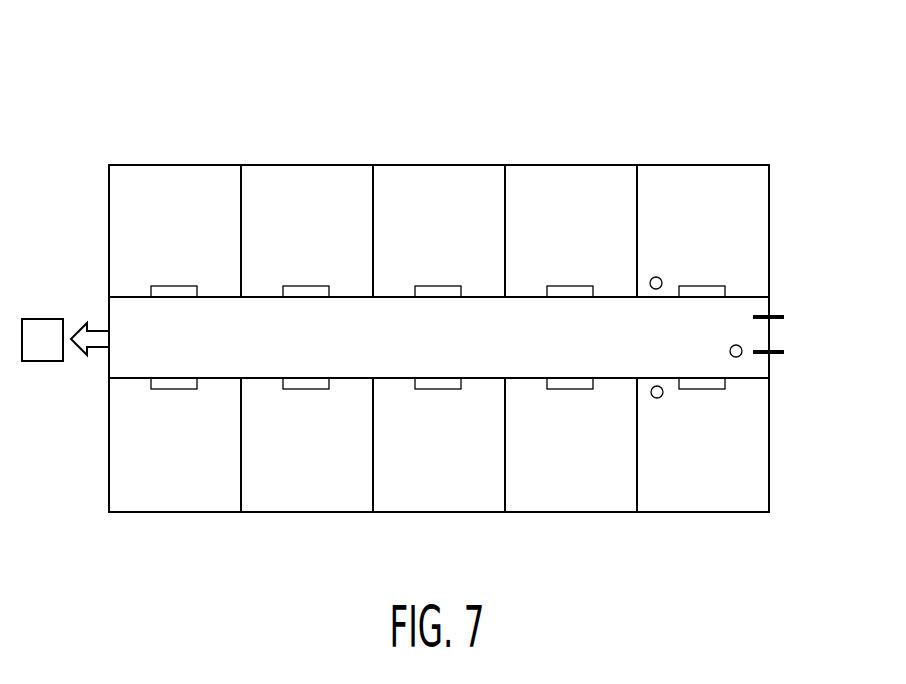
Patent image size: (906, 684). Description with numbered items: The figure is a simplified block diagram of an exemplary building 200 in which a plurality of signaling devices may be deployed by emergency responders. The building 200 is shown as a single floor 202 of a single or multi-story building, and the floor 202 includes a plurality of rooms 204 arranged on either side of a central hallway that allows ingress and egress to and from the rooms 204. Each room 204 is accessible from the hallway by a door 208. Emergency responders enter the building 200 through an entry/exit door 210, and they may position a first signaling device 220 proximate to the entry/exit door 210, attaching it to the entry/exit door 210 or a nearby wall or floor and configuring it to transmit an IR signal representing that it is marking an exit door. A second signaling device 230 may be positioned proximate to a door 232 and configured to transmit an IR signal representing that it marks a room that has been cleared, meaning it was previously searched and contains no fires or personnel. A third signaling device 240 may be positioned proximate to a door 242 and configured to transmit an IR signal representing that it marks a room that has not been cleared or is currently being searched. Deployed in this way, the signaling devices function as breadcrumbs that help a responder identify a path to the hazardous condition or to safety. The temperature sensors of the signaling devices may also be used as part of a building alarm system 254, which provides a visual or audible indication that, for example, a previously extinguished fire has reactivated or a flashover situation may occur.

The building 200 is at (120, 116).
The floor 202 is at (128, 360).
The rooms 204 is at (155, 210).
The door 208 is at (187, 292).
The entry/exit door 210 is at (780, 333).
The first signaling device 220 is at (730, 350).
The second signaling device 230 is at (657, 385).
The third signaling device 240 is at (653, 290).
The door 242 is at (688, 290).
The door 232 is at (720, 385).
The building alarm system 254 is at (42, 330).